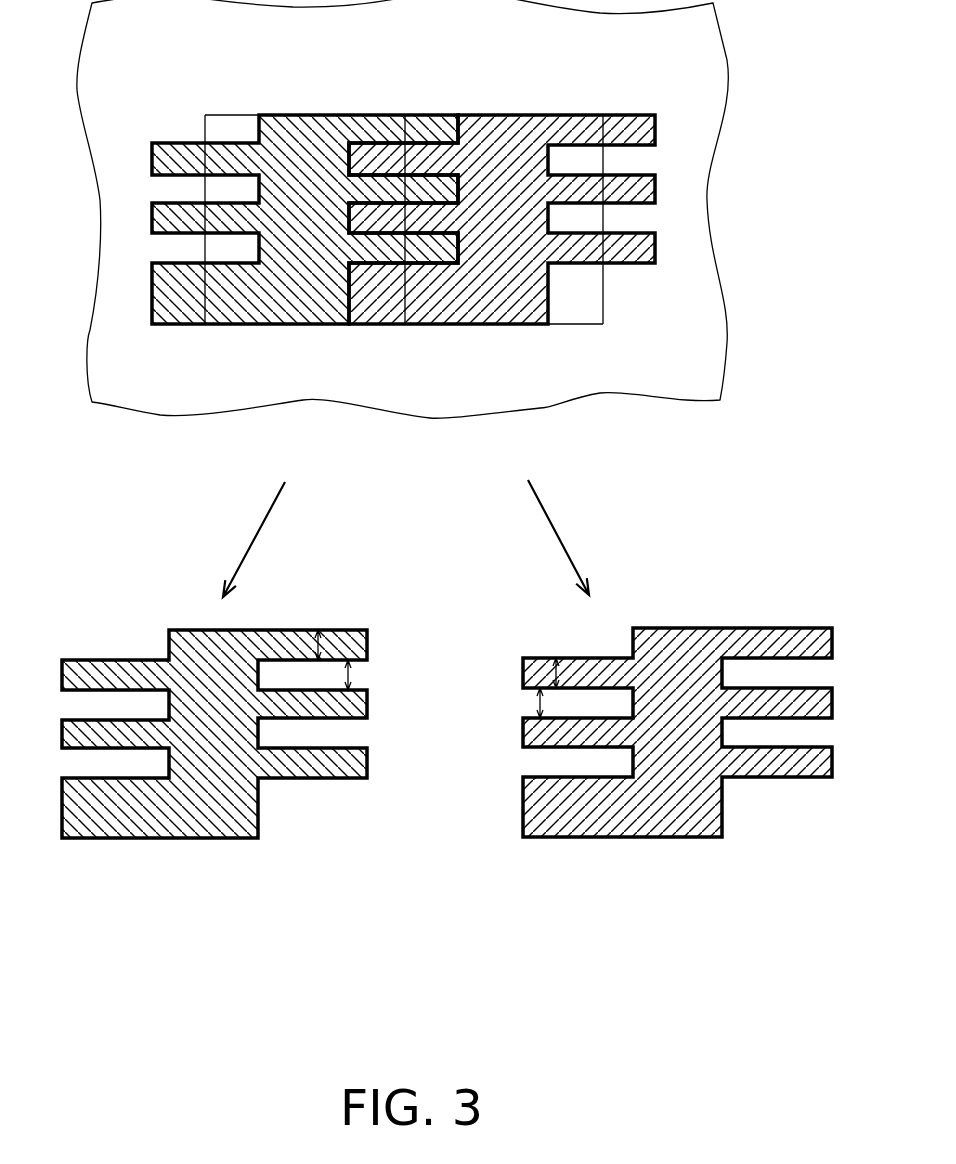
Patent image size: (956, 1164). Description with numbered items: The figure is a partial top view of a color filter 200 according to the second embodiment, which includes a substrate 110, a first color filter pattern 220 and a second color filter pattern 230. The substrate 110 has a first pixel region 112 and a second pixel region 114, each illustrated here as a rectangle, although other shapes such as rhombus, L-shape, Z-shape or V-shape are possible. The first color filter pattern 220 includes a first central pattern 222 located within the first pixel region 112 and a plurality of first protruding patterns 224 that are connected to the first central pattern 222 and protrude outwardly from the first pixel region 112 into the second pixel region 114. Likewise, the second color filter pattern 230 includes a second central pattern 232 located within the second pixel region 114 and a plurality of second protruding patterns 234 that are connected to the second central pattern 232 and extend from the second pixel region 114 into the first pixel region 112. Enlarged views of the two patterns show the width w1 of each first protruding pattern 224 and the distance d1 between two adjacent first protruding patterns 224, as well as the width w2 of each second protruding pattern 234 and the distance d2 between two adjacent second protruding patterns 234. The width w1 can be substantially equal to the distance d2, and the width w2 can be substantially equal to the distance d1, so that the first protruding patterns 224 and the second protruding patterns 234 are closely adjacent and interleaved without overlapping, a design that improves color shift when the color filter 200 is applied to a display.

The substrate 110 is at (690, 348).
The first pixel region 112 is at (205, 96).
The second pixel region 114 is at (603, 96).
The color filter 200 is at (447, 543).
The first color filter pattern 220 is at (252, 300).
The first central pattern 222 is at (213, 740).
The first protruding patterns 224 is at (273, 762).
The second color filter pattern 230 is at (535, 247).
The second central pattern 232 is at (697, 803).
The second protruding patterns 234 is at (622, 728).
The width of each first protruding pattern w1 is at (322, 645).
The distance between two adjacent first protruding patterns d1 is at (352, 672).
The width of each second protruding pattern w2 is at (556, 668).
The distance between two adjacent second protruding patterns d2 is at (537, 705).